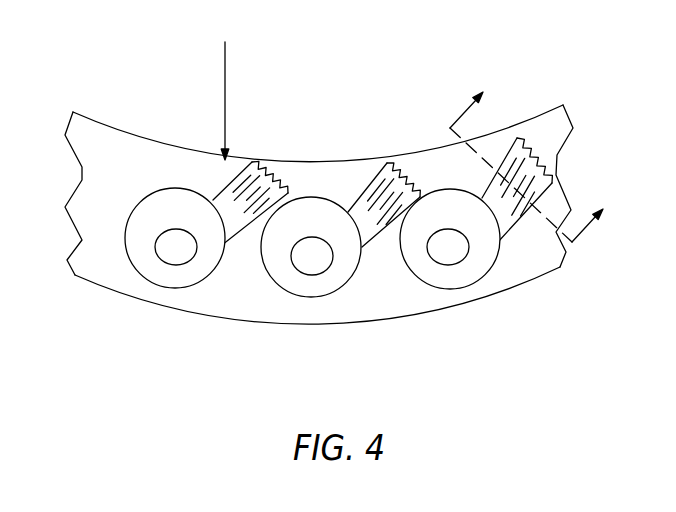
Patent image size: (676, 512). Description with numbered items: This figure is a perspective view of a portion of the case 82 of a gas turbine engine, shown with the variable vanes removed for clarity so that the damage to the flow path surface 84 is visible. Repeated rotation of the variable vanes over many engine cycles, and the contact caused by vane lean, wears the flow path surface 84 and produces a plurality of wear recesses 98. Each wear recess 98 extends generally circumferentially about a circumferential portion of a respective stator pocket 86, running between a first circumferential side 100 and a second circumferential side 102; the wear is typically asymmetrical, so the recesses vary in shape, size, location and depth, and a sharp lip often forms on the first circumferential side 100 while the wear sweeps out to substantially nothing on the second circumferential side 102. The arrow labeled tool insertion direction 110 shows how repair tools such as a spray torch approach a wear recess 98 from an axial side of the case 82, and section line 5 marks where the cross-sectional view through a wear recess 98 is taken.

The section line 5- 5 is at (536, 155).
The case 82 is at (360, 135).
The flow path surface 84 is at (387, 295).
The stator pocket 86 is at (148, 220).
The wear recess 98 is at (357, 229).
The first circumferential side 100 is at (210, 184).
The second circumferential side 102 is at (243, 248).
The tool insertion direction 110 is at (222, 57).